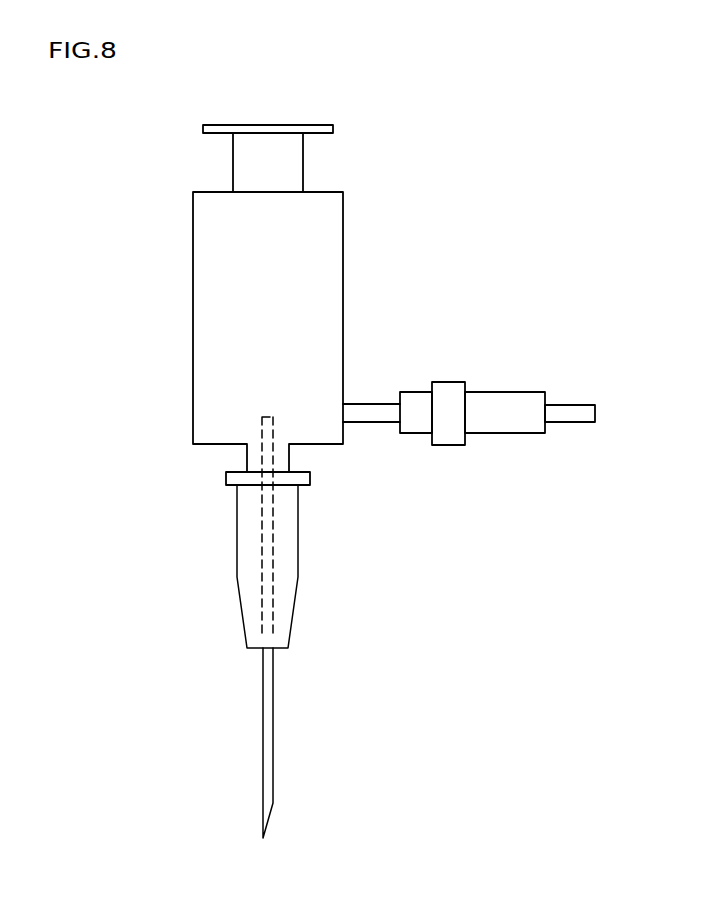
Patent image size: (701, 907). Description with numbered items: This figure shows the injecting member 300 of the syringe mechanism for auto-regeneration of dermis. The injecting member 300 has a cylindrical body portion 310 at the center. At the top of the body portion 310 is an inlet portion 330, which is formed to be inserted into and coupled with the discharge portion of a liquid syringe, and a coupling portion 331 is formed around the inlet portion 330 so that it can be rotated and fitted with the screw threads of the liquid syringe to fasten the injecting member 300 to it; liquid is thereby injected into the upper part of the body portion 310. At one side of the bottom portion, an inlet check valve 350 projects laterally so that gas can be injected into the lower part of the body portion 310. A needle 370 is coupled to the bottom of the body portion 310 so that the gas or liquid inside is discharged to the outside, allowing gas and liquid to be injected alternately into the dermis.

The injecting member 300 is at (537, 196).
The body portion 310 is at (203, 302).
The inlet portion 330 is at (259, 172).
The coupling portion 331 is at (333, 125).
The inlet check valve 350 is at (503, 403).
The needle 370 is at (270, 713).